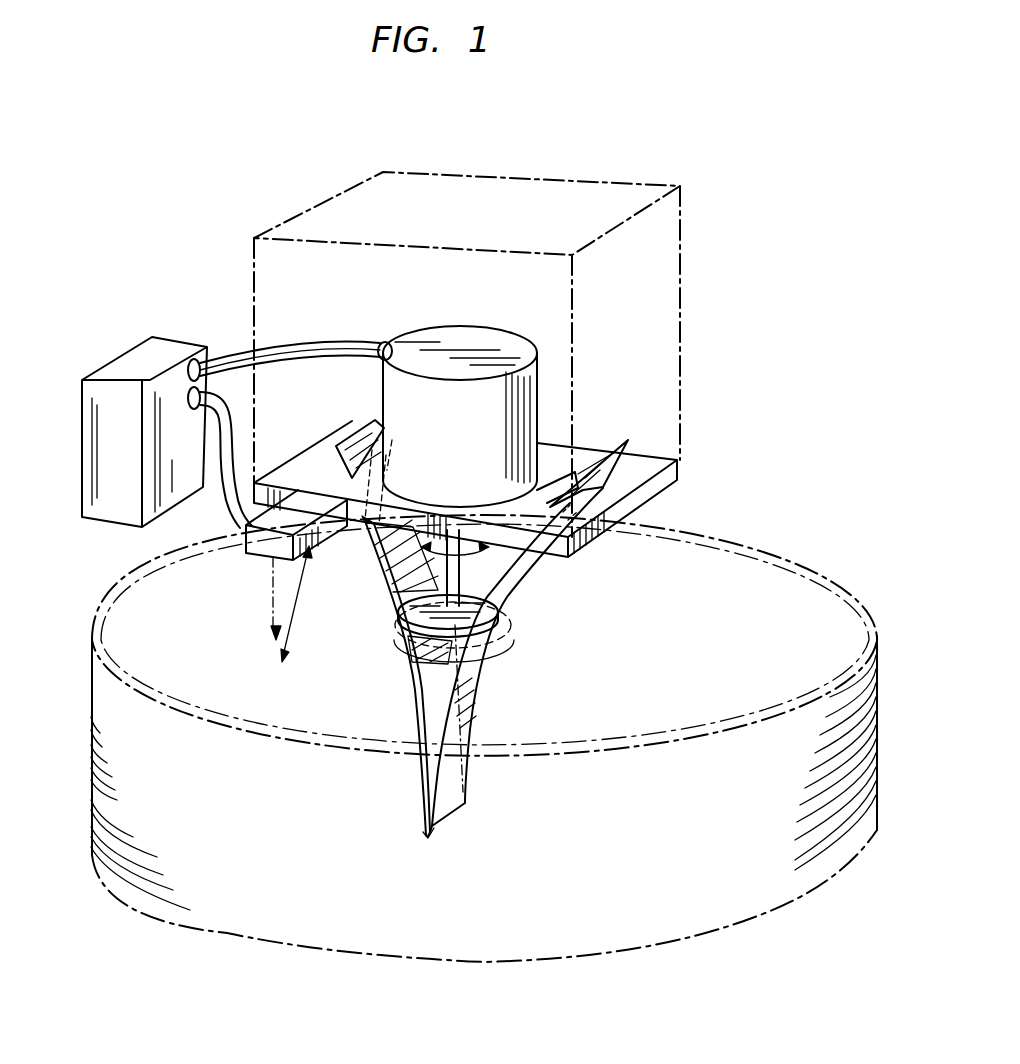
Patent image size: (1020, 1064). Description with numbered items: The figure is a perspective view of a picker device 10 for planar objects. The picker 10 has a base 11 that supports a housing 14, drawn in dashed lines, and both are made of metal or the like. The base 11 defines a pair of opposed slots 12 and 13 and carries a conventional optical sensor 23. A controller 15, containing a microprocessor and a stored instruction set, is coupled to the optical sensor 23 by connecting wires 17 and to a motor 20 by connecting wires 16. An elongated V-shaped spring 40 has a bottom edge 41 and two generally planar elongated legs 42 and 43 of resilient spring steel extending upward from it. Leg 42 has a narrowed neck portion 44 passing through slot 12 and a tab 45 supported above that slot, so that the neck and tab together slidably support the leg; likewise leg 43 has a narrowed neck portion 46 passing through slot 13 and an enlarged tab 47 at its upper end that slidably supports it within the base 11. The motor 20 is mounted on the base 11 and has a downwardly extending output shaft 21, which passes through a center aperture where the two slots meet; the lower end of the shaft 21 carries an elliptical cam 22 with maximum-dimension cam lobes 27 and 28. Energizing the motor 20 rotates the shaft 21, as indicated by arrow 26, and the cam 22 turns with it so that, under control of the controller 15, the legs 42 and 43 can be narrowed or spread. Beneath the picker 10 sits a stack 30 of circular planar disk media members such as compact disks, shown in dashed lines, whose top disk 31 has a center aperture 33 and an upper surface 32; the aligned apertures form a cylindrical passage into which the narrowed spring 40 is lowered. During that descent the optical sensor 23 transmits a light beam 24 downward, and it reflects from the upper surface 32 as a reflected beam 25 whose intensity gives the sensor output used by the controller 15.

The picker device 10 is at (745, 407).
The base 11 is at (663, 492).
The slot 12 is at (543, 490).
The slot 13 is at (378, 468).
The housing 14 is at (682, 305).
The controller 15 is at (172, 330).
The connecting wires 16 is at (268, 348).
The connecting wires 17 is at (224, 450).
The motor 20 is at (460, 347).
The output shaft 21 is at (488, 580).
The elliptical cam 22 is at (499, 617).
The optical sensor 23 is at (258, 543).
The light beam 24 is at (273, 585).
The reflected beam 25 is at (297, 600).
The arrow 26 is at (440, 579).
The cam lobe 27 is at (505, 597).
The cam lobe 28 is at (392, 625).
The stack 30 is at (878, 730).
The top disk 31 is at (308, 735).
The upper surface 32 is at (279, 720).
The center aperture 33 is at (508, 643).
The V-shaped spring 40 is at (478, 728).
The bottom edge 41 is at (447, 822).
The leg 42 is at (474, 692).
The leg 43 is at (420, 700).
The neck portion 44 is at (607, 530).
The tab 45 is at (602, 458).
The neck portion 46 is at (374, 535).
The tab 47 is at (355, 442).